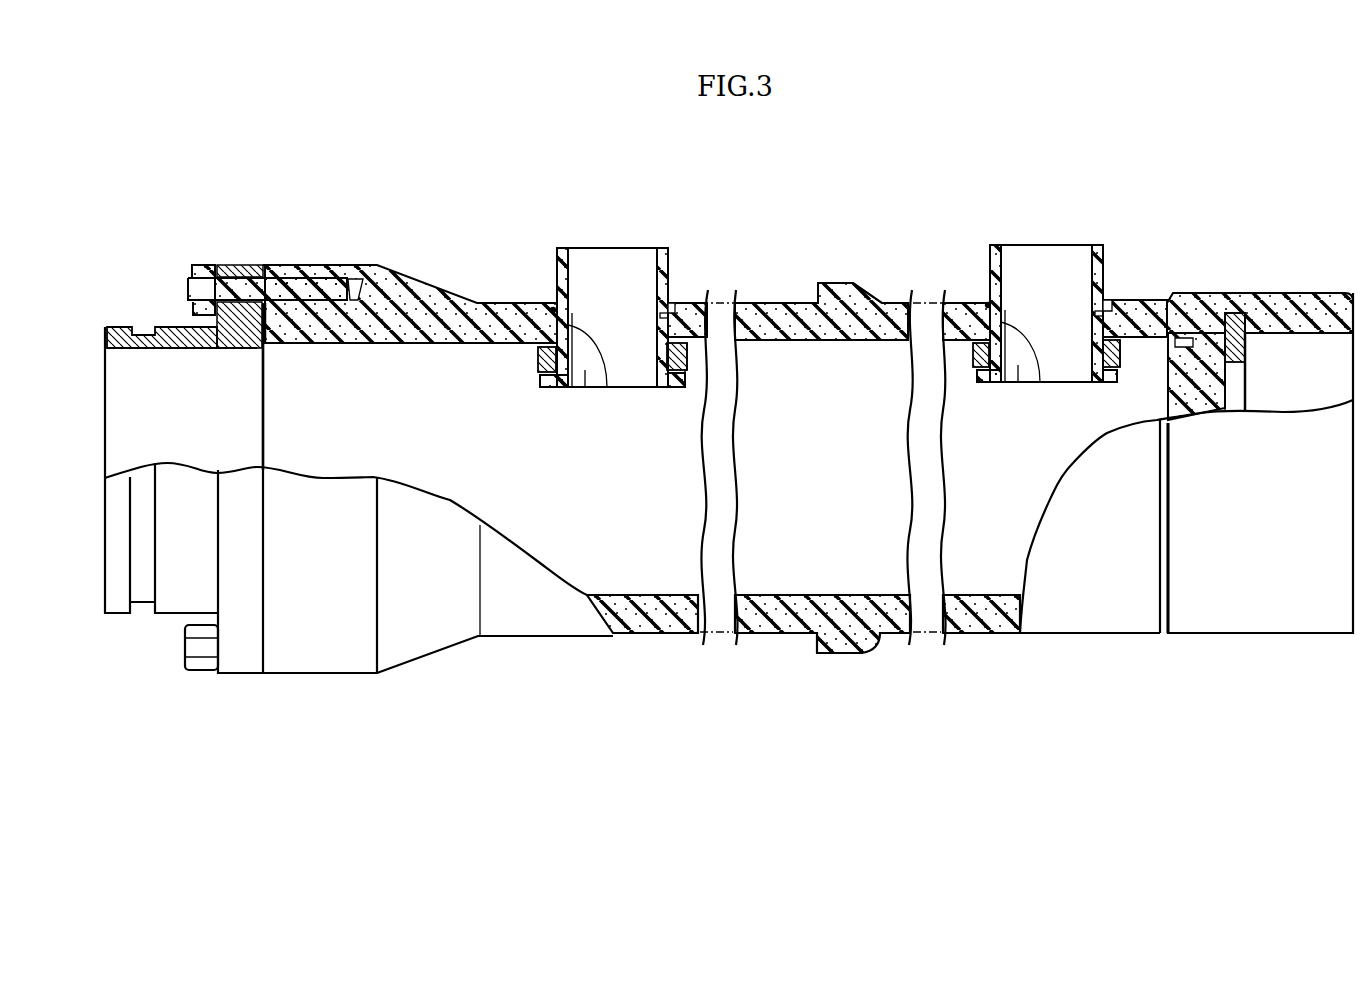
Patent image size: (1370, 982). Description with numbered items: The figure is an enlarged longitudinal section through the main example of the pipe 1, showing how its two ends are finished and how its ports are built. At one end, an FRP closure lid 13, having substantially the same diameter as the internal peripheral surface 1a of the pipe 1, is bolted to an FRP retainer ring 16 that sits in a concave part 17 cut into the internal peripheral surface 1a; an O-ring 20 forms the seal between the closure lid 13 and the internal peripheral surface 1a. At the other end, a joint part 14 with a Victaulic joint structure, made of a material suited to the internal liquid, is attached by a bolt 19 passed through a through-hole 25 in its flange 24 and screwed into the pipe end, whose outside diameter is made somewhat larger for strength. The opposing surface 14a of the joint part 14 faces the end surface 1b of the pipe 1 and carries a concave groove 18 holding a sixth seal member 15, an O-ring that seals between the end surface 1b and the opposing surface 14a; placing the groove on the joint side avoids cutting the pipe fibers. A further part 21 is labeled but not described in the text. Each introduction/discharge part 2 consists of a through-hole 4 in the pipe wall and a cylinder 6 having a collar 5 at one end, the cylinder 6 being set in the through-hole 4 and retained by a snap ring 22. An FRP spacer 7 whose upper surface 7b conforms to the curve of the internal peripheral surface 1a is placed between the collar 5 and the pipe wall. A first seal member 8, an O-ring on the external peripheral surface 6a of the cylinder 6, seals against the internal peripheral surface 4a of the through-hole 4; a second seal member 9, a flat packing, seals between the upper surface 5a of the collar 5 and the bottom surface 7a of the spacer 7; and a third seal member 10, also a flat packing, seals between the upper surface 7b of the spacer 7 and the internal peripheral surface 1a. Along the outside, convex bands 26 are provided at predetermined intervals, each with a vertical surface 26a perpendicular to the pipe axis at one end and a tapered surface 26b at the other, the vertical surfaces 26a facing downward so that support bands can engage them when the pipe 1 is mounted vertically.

The pipe 1 is at (650, 677).
The internal peripheral surface 1a is at (540, 383).
The end surface 1b is at (252, 267).
The introduction/discharge part 2 is at (830, 306).
The through-hole 4 is at (683, 310).
The internal peripheral surface of the through-hole 4a is at (607, 387).
The collar 5 is at (680, 394).
The upper surface of the collar 5a is at (688, 370).
The cylinder 6 is at (558, 248).
The external peripheral surface of the cylinder 6a is at (547, 310).
The spacer 7 is at (667, 352).
The bottom surface of the spacer 7a is at (672, 385).
The upper surface of the spacer 7b is at (697, 317).
The first seal member 8 is at (512, 345).
The second seal member 9 is at (675, 390).
The third seal member 10 is at (660, 316).
The closure lid 13 is at (1210, 352).
The joint part 14 is at (122, 327).
The opposing surface 14a is at (285, 343).
The sixth seal member 15 is at (210, 347).
The retainer ring 16 is at (1263, 327).
The concave part 17 is at (1238, 320).
The concave groove 18 is at (257, 327).
The bolt 19 is at (188, 287).
The O-ring 20 is at (1188, 340).
The pipe body 21 is at (293, 280).
The snap ring 22 is at (553, 310).
The flange 24 is at (238, 260).
The through-hole 25 is at (228, 287).
The convex band 26 is at (828, 278).
The vertical surface 26a is at (818, 285).
The tapered surface 26b is at (880, 297).